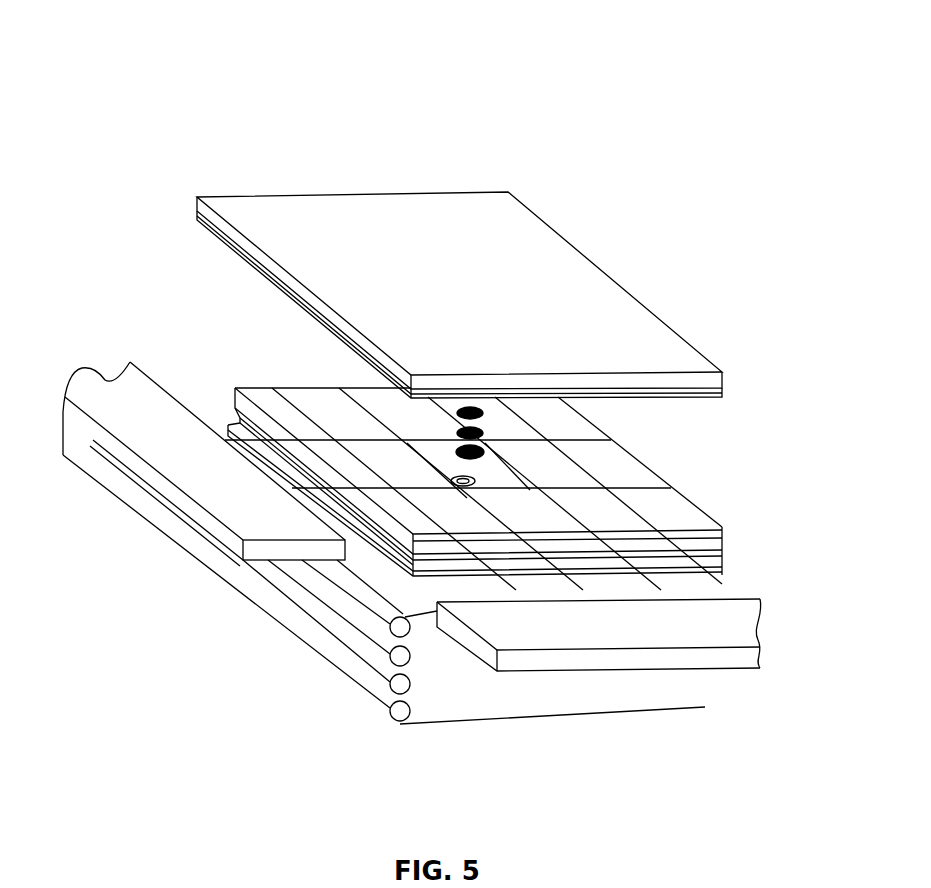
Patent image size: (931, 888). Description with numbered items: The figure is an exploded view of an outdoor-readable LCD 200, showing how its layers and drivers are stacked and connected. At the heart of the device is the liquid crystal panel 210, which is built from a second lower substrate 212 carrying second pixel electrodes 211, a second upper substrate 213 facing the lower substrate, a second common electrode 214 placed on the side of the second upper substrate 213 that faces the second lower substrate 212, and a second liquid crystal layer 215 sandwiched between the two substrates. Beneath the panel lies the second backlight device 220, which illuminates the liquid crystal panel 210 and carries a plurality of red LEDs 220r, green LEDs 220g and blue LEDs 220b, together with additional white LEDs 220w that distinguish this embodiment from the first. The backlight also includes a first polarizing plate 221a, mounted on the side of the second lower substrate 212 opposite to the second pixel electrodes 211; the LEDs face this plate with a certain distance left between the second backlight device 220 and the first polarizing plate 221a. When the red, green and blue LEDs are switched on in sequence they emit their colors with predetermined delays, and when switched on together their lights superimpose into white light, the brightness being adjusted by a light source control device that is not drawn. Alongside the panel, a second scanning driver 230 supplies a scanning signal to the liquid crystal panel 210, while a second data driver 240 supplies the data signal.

The outdoor-readable LCD 200 is at (141, 106).
The second upper substrate 213 is at (642, 328).
The second common electrode 214 is at (203, 208).
The liquid crystal panel 210 is at (780, 372).
The second pixel electrodes 211 is at (310, 410).
The second lower substrate 212 is at (233, 388).
The first polarizing plate 221a is at (228, 420).
The second liquid crystal layer 215 is at (643, 430).
The second backlight device 220 is at (780, 540).
The red LEDs 220r is at (390, 621).
The green LEDs 220g is at (390, 657).
The blue LEDs 220b is at (390, 683).
The white LEDs 220w is at (390, 710).
The second scanning driver 230 is at (628, 632).
The second data driver 240 is at (158, 425).